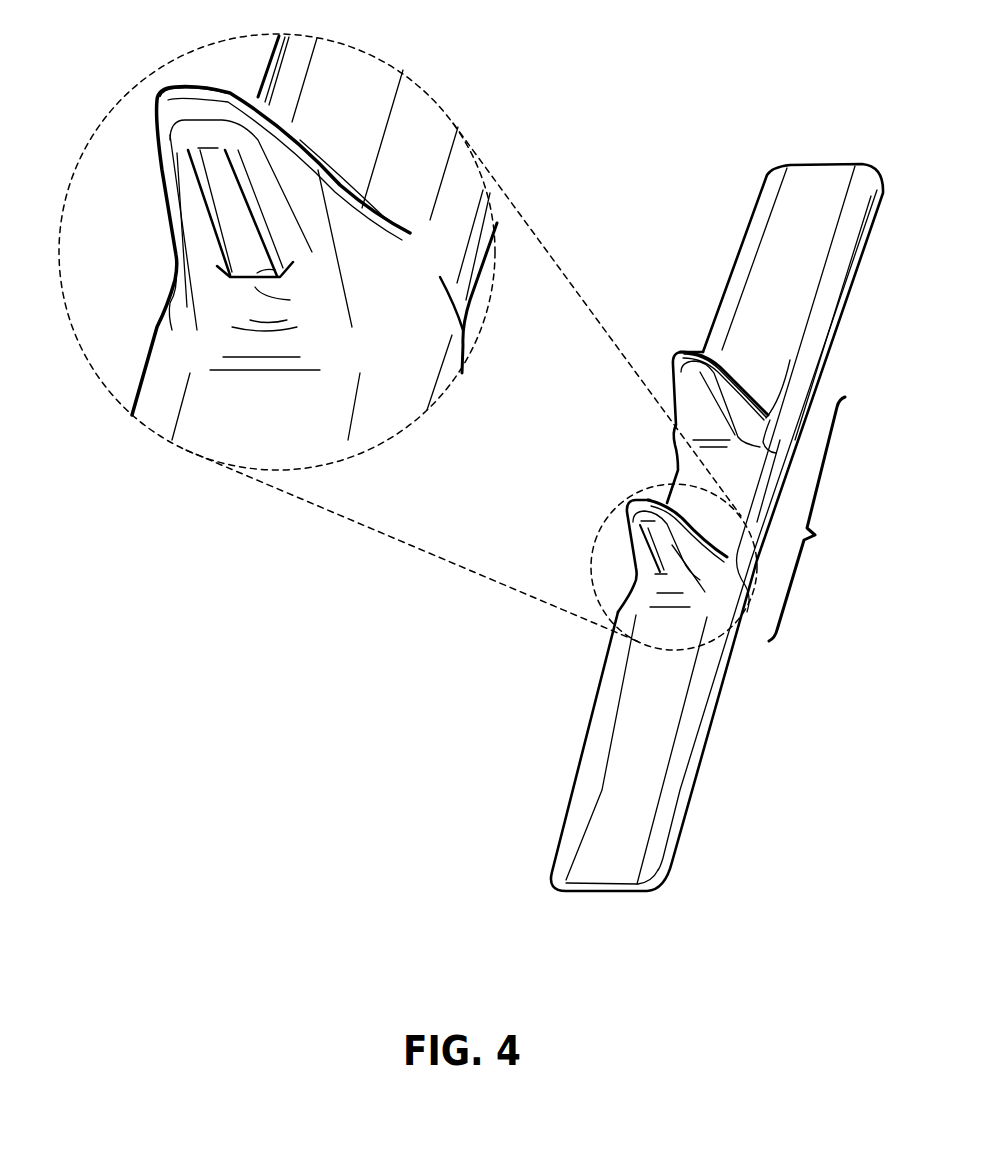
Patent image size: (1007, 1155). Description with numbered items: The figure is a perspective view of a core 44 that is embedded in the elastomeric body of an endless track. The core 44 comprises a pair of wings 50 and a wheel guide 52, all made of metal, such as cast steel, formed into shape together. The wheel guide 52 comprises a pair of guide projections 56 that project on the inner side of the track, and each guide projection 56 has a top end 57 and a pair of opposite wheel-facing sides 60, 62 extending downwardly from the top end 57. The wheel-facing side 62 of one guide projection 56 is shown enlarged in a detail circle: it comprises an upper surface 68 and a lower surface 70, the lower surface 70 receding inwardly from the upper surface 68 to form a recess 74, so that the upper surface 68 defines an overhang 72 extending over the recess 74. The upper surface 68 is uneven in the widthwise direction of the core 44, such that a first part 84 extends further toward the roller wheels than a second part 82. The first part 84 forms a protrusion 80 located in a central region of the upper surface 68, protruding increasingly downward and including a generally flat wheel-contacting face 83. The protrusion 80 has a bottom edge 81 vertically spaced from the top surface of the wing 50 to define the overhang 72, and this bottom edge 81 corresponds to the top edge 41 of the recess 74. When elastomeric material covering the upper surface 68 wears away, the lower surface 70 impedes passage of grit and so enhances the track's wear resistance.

The core 44 is at (706, 460).
The wing 50 is at (615, 797).
The wheel guide 52 is at (808, 519).
The guide projection 56 is at (98, 62).
The top end 57 is at (195, 102).
The wheel-facing side 60 is at (690, 398).
The wheel-facing side 62 is at (648, 570).
The upper surface 68 is at (183, 183).
The lower surface 70 is at (250, 283).
The overhang 72 is at (232, 276).
The recess 74 is at (257, 288).
The protrusion 80 is at (224, 192).
The bottom edge 81 is at (344, 256).
The top edge 41 is at (258, 272).
The second part 82 is at (270, 207).
The wheel-contacting face 83 is at (238, 227).
The first part 84 is at (240, 207).